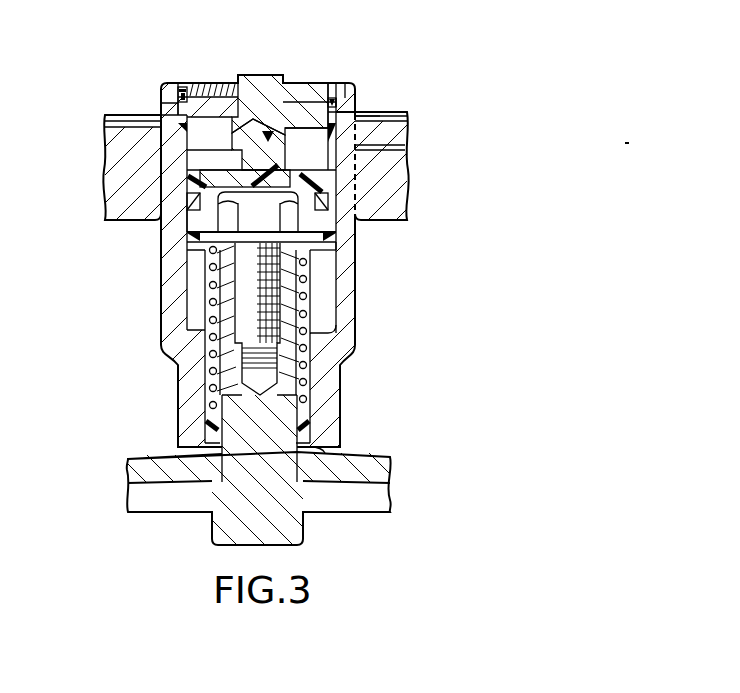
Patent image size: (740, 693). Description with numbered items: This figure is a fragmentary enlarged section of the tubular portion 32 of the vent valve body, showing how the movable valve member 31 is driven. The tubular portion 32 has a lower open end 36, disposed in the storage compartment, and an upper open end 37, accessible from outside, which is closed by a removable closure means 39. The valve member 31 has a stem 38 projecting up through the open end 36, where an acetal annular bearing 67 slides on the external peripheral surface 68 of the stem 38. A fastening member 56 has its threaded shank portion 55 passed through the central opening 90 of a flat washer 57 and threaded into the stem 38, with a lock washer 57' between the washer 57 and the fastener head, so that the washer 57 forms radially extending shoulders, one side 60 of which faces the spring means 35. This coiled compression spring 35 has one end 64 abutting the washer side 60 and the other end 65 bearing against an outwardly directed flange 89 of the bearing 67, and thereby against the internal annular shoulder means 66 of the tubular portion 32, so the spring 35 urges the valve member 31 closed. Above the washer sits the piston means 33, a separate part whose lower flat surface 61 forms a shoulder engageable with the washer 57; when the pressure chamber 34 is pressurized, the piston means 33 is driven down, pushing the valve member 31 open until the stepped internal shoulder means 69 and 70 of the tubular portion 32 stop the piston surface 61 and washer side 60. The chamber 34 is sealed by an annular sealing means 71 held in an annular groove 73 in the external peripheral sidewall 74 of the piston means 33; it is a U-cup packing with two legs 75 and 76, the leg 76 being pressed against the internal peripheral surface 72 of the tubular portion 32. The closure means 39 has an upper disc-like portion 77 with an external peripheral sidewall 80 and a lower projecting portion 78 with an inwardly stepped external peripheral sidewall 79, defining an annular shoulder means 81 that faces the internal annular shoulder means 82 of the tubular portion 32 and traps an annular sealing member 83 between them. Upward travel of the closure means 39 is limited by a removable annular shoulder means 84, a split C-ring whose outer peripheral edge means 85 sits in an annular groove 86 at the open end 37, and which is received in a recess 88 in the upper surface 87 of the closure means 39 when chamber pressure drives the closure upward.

The valve member 31 is at (143, 475).
The tubular portion 32 is at (347, 308).
The piston means 33 is at (333, 240).
The pressure chamber 34 is at (316, 119).
The spring means 35 is at (200, 358).
The open end 36 is at (322, 445).
The open end 37 is at (345, 83).
The stem 38 is at (233, 405).
The closure means 39 is at (252, 100).
The threaded shank portion 55 is at (232, 308).
The fastening member 56 is at (205, 292).
The washer 57 is at (199, 259).
The lock washer 57' is at (222, 236).
The side 60 is at (322, 263).
The lower flat surface 61 is at (340, 252).
The end 64 is at (208, 256).
The end 65 is at (330, 410).
The annular shoulder means 66 is at (207, 435).
The annular bearing 67 is at (290, 425).
The external peripheral surface 68 is at (323, 380).
The annular shoulder means 69 is at (325, 337).
The annular shoulder means 70 is at (320, 353).
The annular sealing means 71 is at (187, 210).
The internal peripheral surface 72 is at (322, 287).
The annular groove 73 is at (350, 183).
The external peripheral sidewall 74 is at (363, 205).
The leg 75 is at (207, 141).
The leg 76 is at (185, 202).
The upper disc-like portion 77 is at (212, 105).
The lower projecting portion 78 is at (130, 141).
The external peripheral sidewall 79 is at (190, 147).
The external peripheral sidewall 80 is at (172, 110).
The annular shoulder means 81 is at (205, 120).
The internal annular shoulder means 82 is at (358, 150).
The annular sealing member 83 is at (367, 122).
The removable annular shoulder means 84 is at (358, 100).
The outer peripheral edge means 85 is at (168, 110).
The annular groove 86 is at (350, 110).
The upper surface 87 is at (292, 100).
The recess 88 is at (355, 117).
The outwardly directed flange 89 is at (312, 425).
The central opening 90 is at (245, 293).